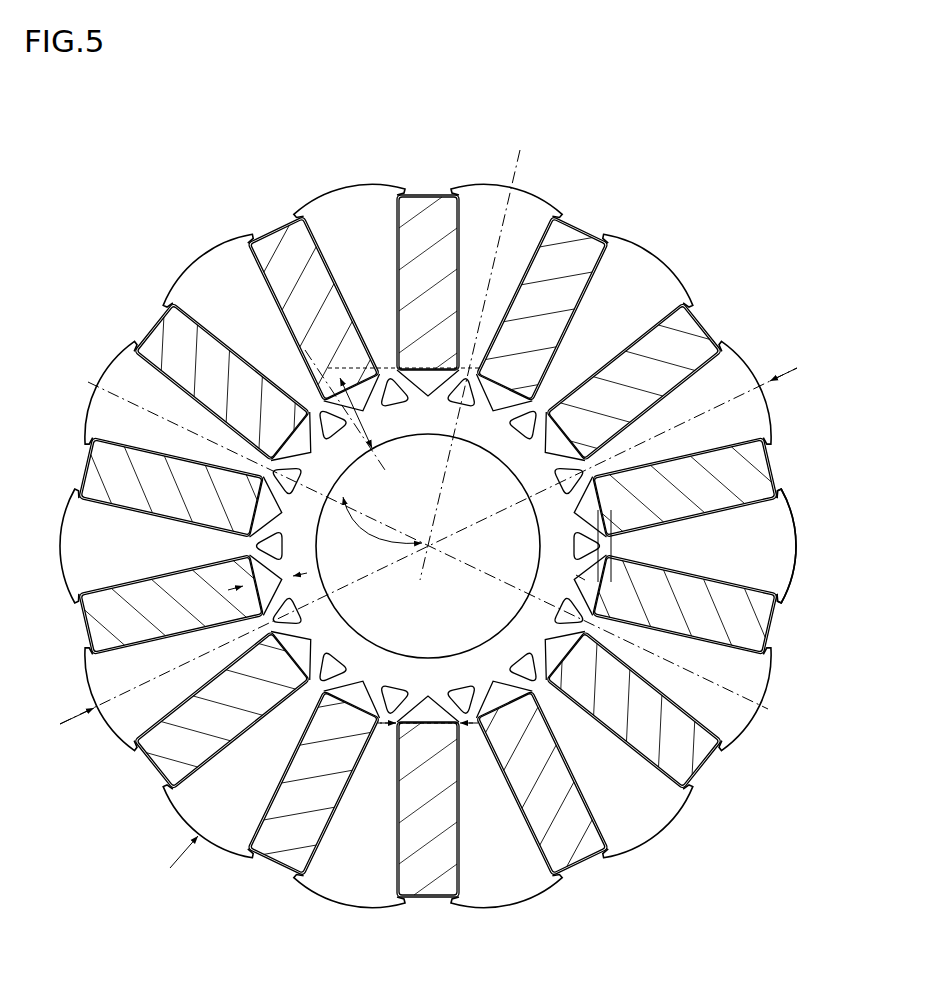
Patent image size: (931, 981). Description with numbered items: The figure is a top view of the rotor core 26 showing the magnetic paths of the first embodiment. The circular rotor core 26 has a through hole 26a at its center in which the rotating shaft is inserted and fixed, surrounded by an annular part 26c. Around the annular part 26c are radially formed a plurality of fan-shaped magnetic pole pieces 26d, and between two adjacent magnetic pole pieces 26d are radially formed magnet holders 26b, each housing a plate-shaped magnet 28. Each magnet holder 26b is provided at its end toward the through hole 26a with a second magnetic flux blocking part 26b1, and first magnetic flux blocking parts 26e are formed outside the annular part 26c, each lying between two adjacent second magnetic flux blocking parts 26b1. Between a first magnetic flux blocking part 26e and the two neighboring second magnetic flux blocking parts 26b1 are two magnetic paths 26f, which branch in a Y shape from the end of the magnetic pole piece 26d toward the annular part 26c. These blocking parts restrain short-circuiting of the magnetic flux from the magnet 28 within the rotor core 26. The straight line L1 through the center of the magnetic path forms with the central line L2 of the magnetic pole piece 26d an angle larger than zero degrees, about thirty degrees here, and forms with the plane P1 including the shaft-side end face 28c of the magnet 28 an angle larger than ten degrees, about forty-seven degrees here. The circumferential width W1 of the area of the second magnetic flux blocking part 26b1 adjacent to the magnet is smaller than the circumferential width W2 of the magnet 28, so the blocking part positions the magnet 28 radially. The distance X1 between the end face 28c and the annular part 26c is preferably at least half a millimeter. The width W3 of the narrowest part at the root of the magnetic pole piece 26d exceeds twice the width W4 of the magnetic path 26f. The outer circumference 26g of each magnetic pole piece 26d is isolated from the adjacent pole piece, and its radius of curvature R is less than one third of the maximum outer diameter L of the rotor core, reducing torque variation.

The rotor core 26 is at (444, 521).
The through hole 26a is at (697, 330).
The magnet holder 26b is at (460, 243).
The second magnetic flux blocking part 26b1 is at (385, 362).
The annular part 26c is at (578, 348).
The magnetic pole piece 26d is at (546, 205).
The first magnetic flux blocking part 26e is at (500, 392).
The magnetic path 26f is at (404, 402).
The outer circumference 26g is at (198, 262).
The magnet 28 is at (436, 194).
The end face 28c is at (427, 362).
The maximum outer diameter L is at (80, 728).
The straight line through the center of the magnetic path L1 is at (96, 382).
The central line of the magnetic pole piece L2 is at (505, 215).
The plane including the end face of the magnet P1 is at (377, 370).
The radius of curvature R is at (236, 796).
The circumferential width W1 is at (576, 575).
The circumferential width of the magnet W2 is at (462, 722).
The width of the narrowest part at the root of the magnetic pole piece W3 is at (612, 545).
The width of the magnetic path W4 is at (580, 522).
The distance X1 is at (250, 572).